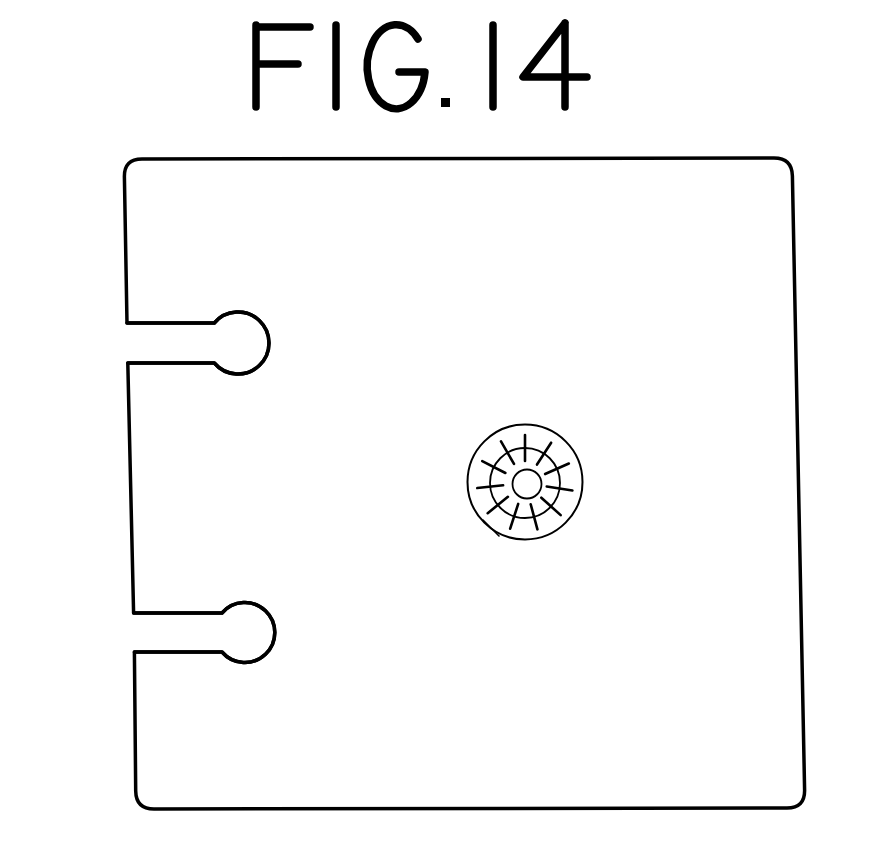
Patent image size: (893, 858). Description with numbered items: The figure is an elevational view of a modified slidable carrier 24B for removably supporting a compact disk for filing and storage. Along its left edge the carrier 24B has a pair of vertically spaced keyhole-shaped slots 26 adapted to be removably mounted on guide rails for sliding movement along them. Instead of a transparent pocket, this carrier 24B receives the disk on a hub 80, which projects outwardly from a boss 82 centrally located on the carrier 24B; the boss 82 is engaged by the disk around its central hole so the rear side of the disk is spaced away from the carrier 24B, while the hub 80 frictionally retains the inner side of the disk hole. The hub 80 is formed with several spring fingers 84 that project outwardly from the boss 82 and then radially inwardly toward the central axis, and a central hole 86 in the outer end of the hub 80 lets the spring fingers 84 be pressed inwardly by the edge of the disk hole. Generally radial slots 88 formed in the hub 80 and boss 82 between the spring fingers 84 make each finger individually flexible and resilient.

The slidable carrier 24B is at (300, 159).
The keyhole-shaped slots 26 is at (145, 347).
The hub 80 is at (583, 481).
The boss 82 is at (518, 430).
The spring fingers 84 is at (546, 520).
The central hole 86 is at (470, 484).
The radial slots 88 is at (492, 523).